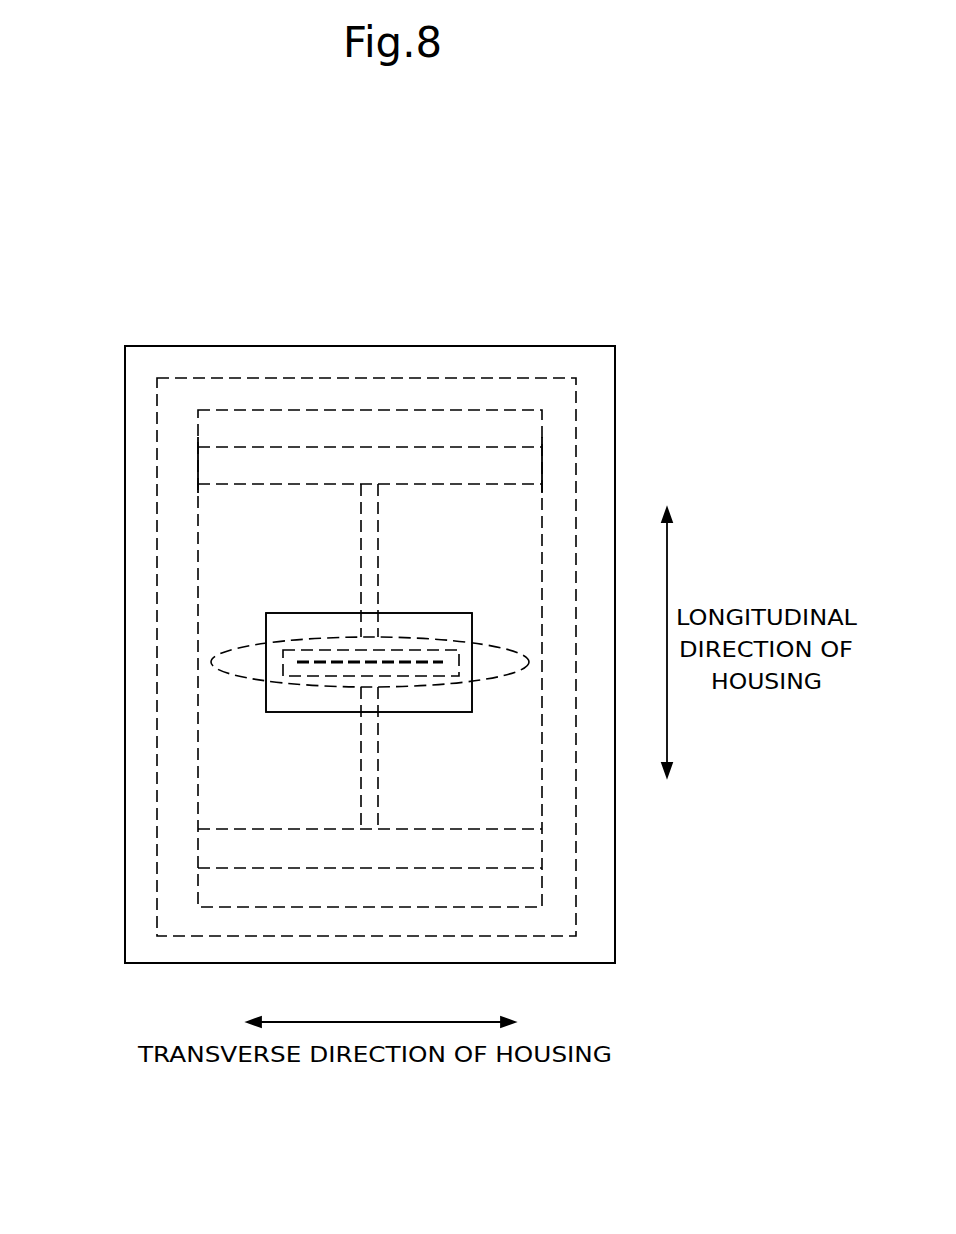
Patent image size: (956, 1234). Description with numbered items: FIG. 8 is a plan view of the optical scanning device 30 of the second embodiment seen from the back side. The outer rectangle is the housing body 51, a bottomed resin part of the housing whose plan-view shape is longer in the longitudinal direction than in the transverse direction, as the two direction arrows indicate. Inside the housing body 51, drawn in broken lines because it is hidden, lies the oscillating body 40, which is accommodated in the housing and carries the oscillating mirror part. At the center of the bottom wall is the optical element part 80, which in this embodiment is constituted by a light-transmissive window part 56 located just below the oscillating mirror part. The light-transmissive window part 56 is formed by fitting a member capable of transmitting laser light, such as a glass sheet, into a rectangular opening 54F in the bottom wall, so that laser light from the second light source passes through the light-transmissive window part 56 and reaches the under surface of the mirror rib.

The optical scanning device 30 is at (143, 1008).
The housing body 51 is at (125, 958).
The oscillating body 40 is at (479, 941).
The light-transmissive window part 56 is at (304, 624).
The optical element part 80 is at (370, 662).
The rectangular opening 54F is at (346, 613).